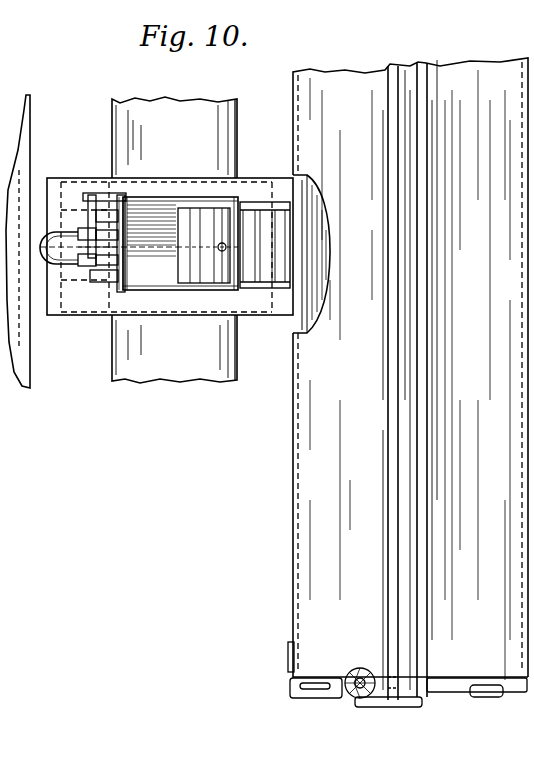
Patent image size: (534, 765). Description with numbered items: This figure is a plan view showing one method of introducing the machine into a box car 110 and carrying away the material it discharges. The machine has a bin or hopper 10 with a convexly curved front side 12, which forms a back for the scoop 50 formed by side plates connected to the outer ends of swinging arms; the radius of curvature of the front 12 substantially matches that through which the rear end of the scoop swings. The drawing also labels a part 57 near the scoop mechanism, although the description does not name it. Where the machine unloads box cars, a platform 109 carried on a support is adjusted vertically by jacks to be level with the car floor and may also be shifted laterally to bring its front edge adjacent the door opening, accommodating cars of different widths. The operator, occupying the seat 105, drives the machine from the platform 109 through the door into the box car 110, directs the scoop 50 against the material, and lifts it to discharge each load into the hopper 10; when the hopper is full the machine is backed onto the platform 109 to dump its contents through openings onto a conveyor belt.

The bin or hopper 10 is at (163, 292).
The convexly curved front side 12 is at (197, 292).
The side plates 50 is at (268, 284).
The arms 57 is at (93, 192).
The seat 105 is at (89, 231).
The platform 109 is at (106, 317).
The box car 110 is at (307, 386).